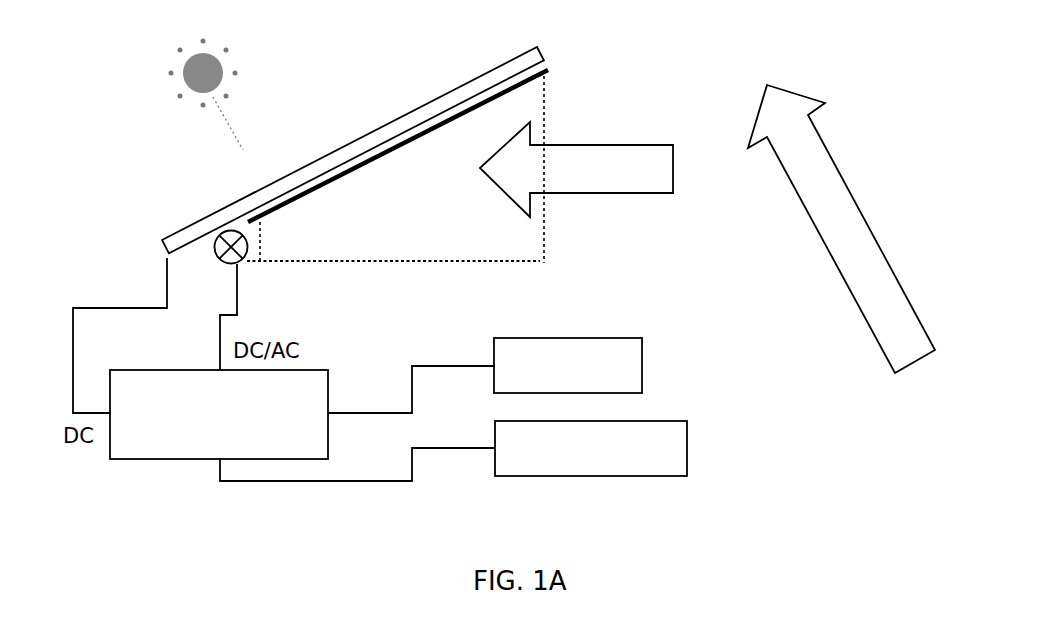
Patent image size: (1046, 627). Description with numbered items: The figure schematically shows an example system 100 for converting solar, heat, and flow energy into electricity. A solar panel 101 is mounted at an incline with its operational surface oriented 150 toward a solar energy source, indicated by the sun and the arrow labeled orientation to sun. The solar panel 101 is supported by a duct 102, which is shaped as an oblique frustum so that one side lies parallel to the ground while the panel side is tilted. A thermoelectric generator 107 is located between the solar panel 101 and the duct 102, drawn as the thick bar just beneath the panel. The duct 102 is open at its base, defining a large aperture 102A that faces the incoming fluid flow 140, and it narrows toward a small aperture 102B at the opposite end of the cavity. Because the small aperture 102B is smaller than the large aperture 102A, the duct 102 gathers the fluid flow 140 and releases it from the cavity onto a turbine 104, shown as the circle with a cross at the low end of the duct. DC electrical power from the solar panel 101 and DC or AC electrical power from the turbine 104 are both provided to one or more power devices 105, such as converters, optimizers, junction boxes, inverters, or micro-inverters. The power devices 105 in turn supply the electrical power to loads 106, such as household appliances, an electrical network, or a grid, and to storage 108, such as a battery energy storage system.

The system 100 is at (188, 186).
The solar panel 101 is at (450, 92).
The duct 102 is at (470, 219).
The large aperture 102A is at (543, 230).
The small aperture 102B is at (260, 237).
The turbine 104 is at (247, 262).
The power devices 105 is at (200, 447).
The loads 106 is at (625, 375).
The thermoelectric generator 107 is at (527, 83).
The storage 108 is at (657, 458).
The fluid flow 140 is at (576, 169).
The orientation 150 is at (841, 229).